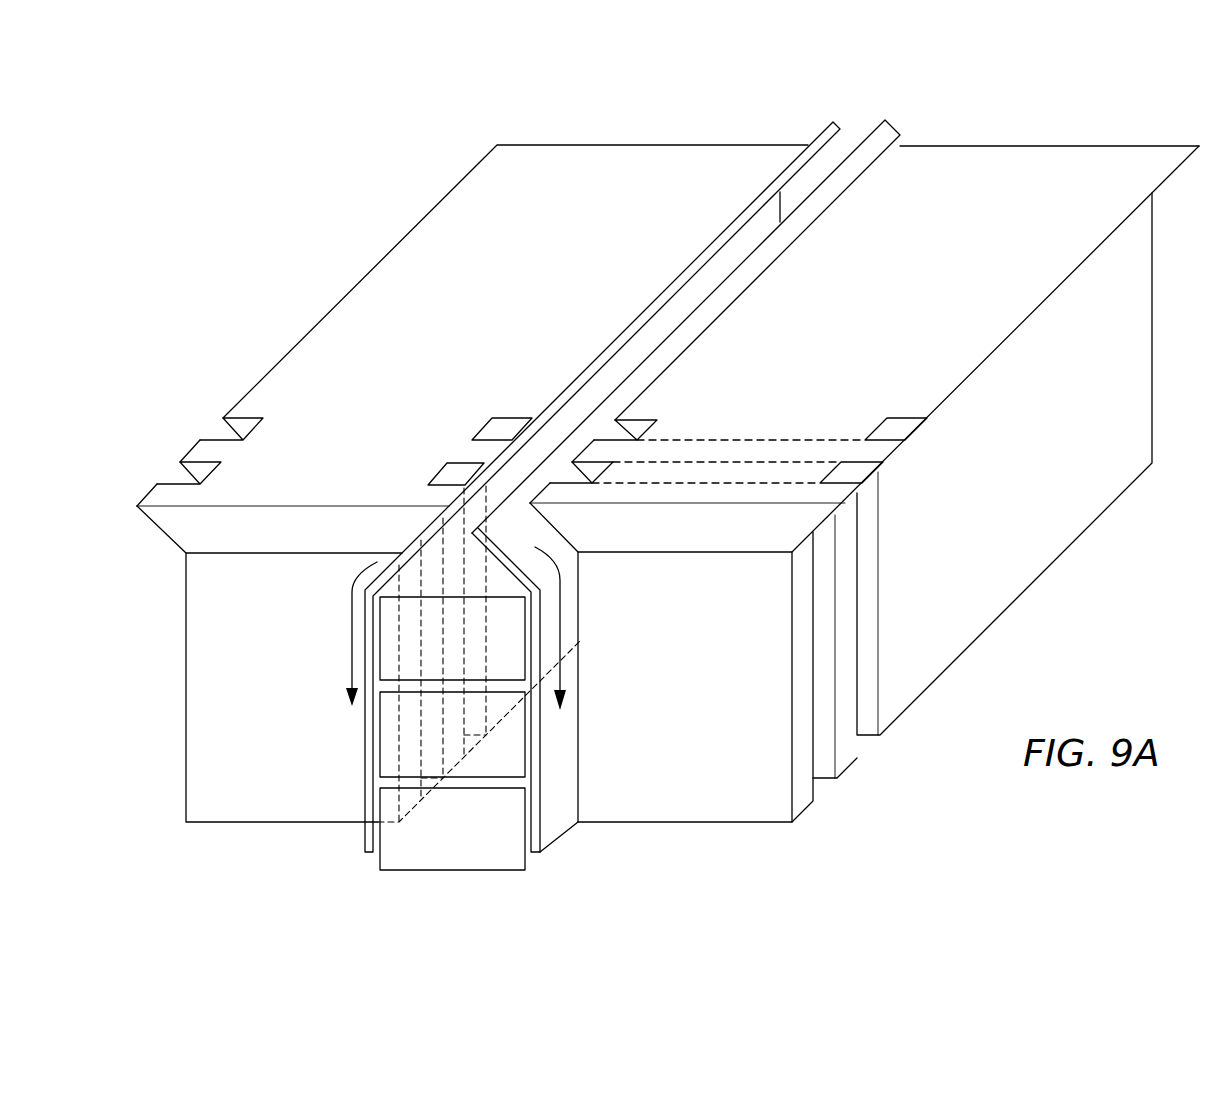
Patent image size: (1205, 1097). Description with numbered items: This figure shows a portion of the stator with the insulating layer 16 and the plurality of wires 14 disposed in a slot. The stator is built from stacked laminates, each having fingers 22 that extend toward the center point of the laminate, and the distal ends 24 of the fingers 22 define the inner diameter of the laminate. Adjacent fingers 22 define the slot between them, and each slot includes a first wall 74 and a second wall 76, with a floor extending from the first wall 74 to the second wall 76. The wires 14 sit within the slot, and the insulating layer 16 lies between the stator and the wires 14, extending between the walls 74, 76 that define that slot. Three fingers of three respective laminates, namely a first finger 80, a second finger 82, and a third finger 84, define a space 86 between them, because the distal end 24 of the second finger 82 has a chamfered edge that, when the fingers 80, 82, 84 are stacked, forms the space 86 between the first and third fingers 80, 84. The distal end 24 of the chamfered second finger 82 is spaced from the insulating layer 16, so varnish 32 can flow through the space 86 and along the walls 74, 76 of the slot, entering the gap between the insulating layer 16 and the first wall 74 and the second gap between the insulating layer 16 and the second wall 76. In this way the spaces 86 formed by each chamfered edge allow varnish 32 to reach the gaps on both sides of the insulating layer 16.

The wires 14 is at (518, 652).
The insulating layer 16 is at (897, 135).
The fingers 22 is at (198, 782).
The distal end 24 is at (178, 498).
The varnish 32 is at (458, 470).
The first wall 74 is at (398, 645).
The second wall 76 is at (578, 610).
The first finger 80 is at (698, 498).
The second finger 82 is at (747, 473).
The third finger 84 is at (795, 455).
The space 86 is at (447, 477).